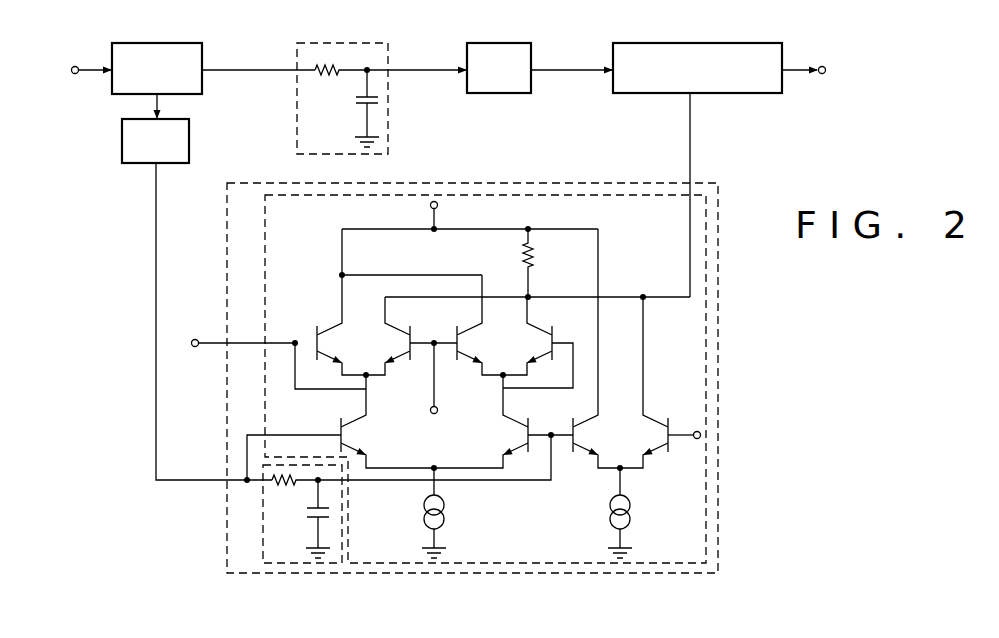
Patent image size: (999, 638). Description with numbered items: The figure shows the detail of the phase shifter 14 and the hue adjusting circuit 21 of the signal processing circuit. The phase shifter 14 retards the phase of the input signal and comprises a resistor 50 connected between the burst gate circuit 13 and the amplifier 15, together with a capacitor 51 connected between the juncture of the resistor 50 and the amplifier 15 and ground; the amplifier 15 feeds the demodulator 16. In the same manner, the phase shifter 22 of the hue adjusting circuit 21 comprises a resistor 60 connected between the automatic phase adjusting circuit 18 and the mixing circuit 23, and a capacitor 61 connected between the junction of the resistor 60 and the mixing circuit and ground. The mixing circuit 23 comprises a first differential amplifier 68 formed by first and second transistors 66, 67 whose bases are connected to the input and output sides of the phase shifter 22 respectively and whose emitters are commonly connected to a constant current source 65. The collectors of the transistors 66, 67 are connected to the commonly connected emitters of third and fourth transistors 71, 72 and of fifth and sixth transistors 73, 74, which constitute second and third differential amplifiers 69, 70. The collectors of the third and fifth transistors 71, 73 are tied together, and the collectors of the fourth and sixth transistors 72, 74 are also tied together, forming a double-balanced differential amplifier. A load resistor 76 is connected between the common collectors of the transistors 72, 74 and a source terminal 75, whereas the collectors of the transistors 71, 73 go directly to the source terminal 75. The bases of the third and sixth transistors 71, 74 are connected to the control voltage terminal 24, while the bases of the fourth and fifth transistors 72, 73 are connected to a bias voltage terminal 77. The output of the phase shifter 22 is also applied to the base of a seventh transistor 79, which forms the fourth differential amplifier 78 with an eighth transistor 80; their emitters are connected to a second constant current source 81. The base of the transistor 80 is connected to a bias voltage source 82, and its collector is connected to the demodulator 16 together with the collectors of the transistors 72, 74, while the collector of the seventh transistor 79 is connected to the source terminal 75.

The burst gate circuit 13 is at (157, 43).
The phase shifter 14 is at (340, 43).
The amplifier 15 is at (499, 43).
The demodulator 16 is at (702, 42).
The automatic phase adjusting circuit 18 is at (120, 146).
The hue adjusting circuit 21 is at (718, 409).
The phase shifter 22 is at (275, 541).
The mixing circuit 23 is at (694, 364).
The control voltage terminal 24 is at (186, 347).
The resistor 50 is at (329, 75).
The capacitor 51 is at (354, 102).
The resistor 60 is at (283, 486).
The capacitor 61 is at (309, 519).
The constant current source 65 is at (446, 512).
The first transistor 66 is at (346, 423).
The second transistor 67 is at (524, 423).
The first differential amplifier 68 is at (434, 423).
The second differential amplifier 69 is at (362, 326).
The third differential amplifier 70 is at (506, 326).
The third transistor 71 is at (327, 332).
The fourth transistor 72 is at (399, 333).
The fifth transistor 73 is at (469, 333).
The sixth transistor 74 is at (539, 333).
The source terminal 75 is at (441, 208).
The load resistor 76 is at (536, 259).
The bias voltage terminal 77 is at (438, 409).
The fourth differential amplifier 78 is at (622, 350).
The seventh transistor 79 is at (580, 423).
The eighth transistor 80 is at (661, 421).
The second constant current source 81 is at (610, 511).
The bias voltage source 82 is at (694, 440).